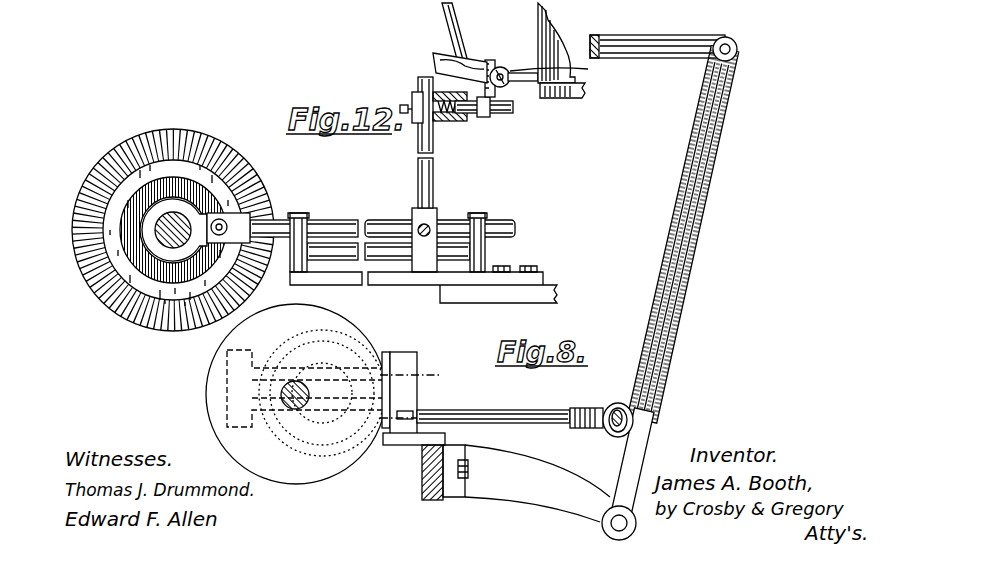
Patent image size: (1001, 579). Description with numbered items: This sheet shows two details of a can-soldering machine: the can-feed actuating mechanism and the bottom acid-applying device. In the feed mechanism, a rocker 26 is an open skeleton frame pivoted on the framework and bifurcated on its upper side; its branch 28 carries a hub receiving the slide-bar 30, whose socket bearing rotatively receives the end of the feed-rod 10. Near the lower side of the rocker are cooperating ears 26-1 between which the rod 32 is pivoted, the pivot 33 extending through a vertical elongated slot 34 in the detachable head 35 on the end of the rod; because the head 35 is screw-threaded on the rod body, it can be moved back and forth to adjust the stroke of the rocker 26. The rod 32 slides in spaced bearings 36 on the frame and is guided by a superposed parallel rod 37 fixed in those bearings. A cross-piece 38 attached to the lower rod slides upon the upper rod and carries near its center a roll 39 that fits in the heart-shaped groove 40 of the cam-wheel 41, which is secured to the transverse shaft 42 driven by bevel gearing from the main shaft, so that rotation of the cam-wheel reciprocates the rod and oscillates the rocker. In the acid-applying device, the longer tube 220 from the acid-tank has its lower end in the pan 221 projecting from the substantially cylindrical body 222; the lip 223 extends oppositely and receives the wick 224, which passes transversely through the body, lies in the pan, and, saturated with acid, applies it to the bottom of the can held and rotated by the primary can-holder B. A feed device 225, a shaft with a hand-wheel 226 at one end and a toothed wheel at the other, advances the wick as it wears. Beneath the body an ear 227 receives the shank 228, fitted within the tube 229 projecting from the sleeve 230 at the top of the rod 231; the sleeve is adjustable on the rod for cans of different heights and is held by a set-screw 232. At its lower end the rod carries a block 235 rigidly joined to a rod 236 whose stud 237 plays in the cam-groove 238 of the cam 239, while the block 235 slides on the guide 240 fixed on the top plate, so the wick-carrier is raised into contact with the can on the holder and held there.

In FIG. 8, the feed-rod 10 is at (680, 38).
In FIG. 8, the rocker 26 is at (685, 290).
In FIG. 8, the ears 26-1 is at (653, 406).
In FIG. 8, the branch 28 is at (737, 38).
In FIG. 8, the slide-bar 30 is at (737, 44).
In FIG. 8, the rod 32 is at (520, 418).
In FIG. 8, the pivot 33 is at (622, 404).
In FIG. 8, the vertical elongated slot 34 is at (613, 433).
In FIG. 8, the detachable head 35 is at (590, 408).
In FIG. 8, the bearings 36 is at (240, 350).
In FIG. 8, the superposed rod 37 is at (394, 352).
In FIG. 8, the cross-piece 38 is at (382, 372).
In FIG. 8, the roll 39 is at (382, 432).
In FIG. 8, the heart-shaped groove 40 is at (353, 450).
In FIG. 8, the cam-wheel 41 is at (302, 484).
In FIG. 8, the transverse shaft 42 is at (302, 385).
In FIG. 12, the tube 220 is at (453, 26).
In FIG. 12, the pan 221 is at (465, 60).
In FIG. 12, the cylindrical body 222 is at (500, 67).
In FIG. 12, the lip 223 is at (522, 82).
In FIG. 12, the wick 224 is at (533, 82).
In FIG. 12, the feed device 225 is at (507, 70).
In FIG. 12, the hand-wheel 226 is at (589, 69).
In FIG. 12, the ear 227 is at (489, 118).
In FIG. 12, the shank 228 is at (472, 95).
In FIG. 12, the tube 229 is at (465, 120).
In FIG. 12, the sleeve 230 is at (400, 109).
In FIG. 12, the rod 231 is at (422, 190).
In FIG. 12, the set-screw 232 is at (412, 100).
In FIG. 12, the block 235 is at (437, 216).
In FIG. 12, the rod 236 is at (499, 225).
In FIG. 12, the stud 237 is at (224, 224).
In FIG. 12, the cam-groove 238 is at (205, 197).
In FIG. 12, the cam 239 is at (180, 168).
In FIG. 12, the guide 240 is at (327, 247).
In FIG. 12, the primary can-holder B is at (586, 89).